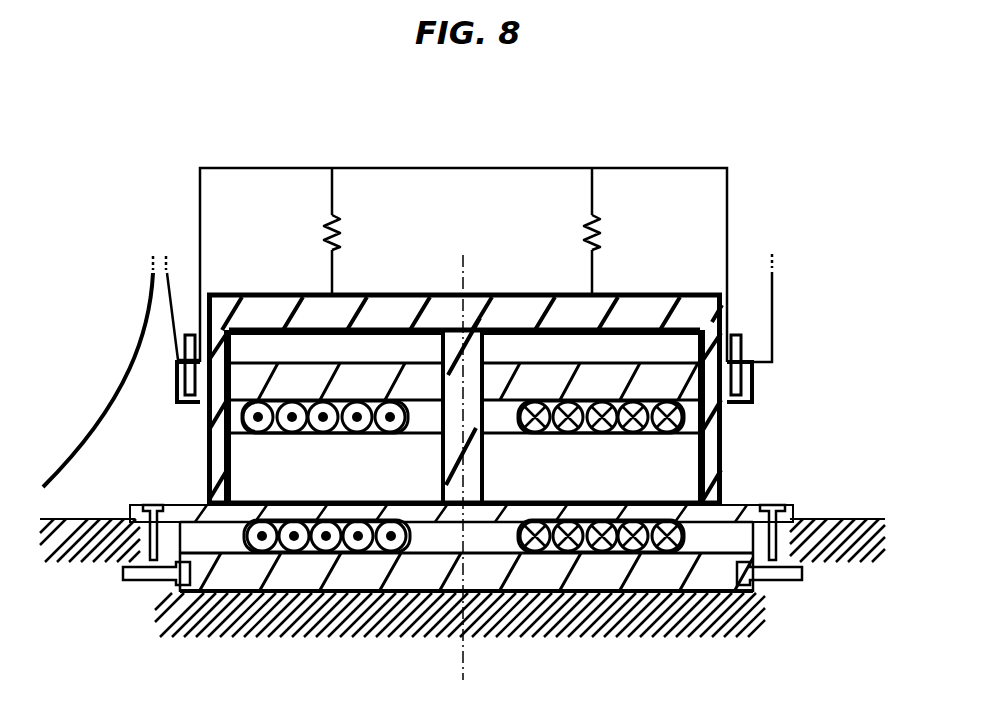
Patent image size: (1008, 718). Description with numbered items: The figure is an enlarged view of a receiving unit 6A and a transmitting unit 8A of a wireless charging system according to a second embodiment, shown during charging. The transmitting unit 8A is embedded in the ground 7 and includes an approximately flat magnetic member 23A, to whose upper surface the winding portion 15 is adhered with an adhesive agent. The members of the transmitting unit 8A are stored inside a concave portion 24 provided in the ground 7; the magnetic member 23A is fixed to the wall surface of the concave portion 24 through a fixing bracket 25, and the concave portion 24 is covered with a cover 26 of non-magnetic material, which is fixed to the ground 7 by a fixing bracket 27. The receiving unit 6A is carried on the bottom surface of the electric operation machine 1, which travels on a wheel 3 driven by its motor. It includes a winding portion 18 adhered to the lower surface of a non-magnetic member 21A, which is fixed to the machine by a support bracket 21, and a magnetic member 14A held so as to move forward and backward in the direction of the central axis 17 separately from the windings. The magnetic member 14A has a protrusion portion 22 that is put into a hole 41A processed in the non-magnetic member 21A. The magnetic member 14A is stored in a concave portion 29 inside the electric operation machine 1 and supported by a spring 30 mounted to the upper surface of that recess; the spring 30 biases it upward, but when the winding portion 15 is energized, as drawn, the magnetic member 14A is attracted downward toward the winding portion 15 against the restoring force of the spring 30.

The electric operation machine 1 is at (774, 290).
The wheel 3 is at (130, 385).
The receiving unit 6A is at (843, 243).
The ground 7 is at (88, 519).
The transmitting unit 8A is at (724, 652).
The magnetic member 14A is at (568, 305).
The winding portion 15 is at (362, 542).
The central axis 17 is at (463, 290).
The winding portion 18 is at (385, 450).
The support bracket 21 is at (740, 345).
The non-magnetic member 21A is at (360, 380).
The protrusion portion 22 is at (722, 470).
The magnetic member 23A is at (297, 567).
The concave portion 24 is at (762, 578).
The fixing bracket 25 is at (122, 574).
The cover 26 is at (528, 500).
The fixing bracket 27 is at (770, 505).
The concave portion 29 is at (727, 212).
The spring 30 is at (600, 238).
The hole 41A is at (450, 438).